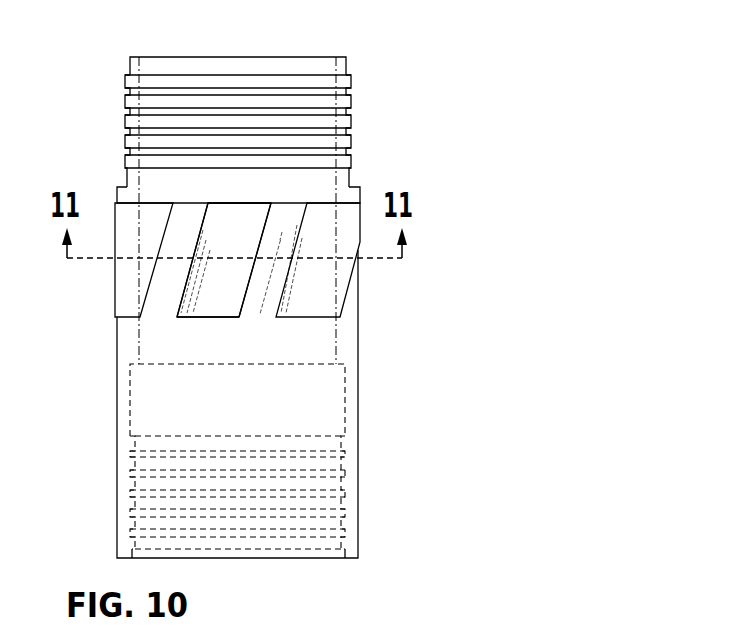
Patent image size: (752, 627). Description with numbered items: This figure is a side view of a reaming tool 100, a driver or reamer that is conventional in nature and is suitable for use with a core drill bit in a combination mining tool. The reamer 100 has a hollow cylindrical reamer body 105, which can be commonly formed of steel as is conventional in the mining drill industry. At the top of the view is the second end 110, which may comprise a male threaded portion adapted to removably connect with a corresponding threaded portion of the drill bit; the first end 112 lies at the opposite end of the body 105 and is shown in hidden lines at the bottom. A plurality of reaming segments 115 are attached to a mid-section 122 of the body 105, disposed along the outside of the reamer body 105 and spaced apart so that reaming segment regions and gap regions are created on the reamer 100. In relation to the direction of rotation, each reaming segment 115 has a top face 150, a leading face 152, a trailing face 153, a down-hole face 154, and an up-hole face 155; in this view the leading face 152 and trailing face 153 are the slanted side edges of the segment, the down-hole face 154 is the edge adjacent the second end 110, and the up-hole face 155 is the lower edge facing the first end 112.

The reaming tool 100 is at (396, 85).
The second end 110 is at (186, 102).
The reaming segments 115 is at (123, 285).
The top face 150 is at (249, 237).
The leading face 152 is at (266, 281).
The trailing face 153 is at (172, 299).
The down-hole face 154 is at (245, 192).
The up-hole face 155 is at (238, 325).
The mid-section 122 is at (358, 285).
The reamer body 105 is at (358, 390).
The first end 112 is at (328, 452).